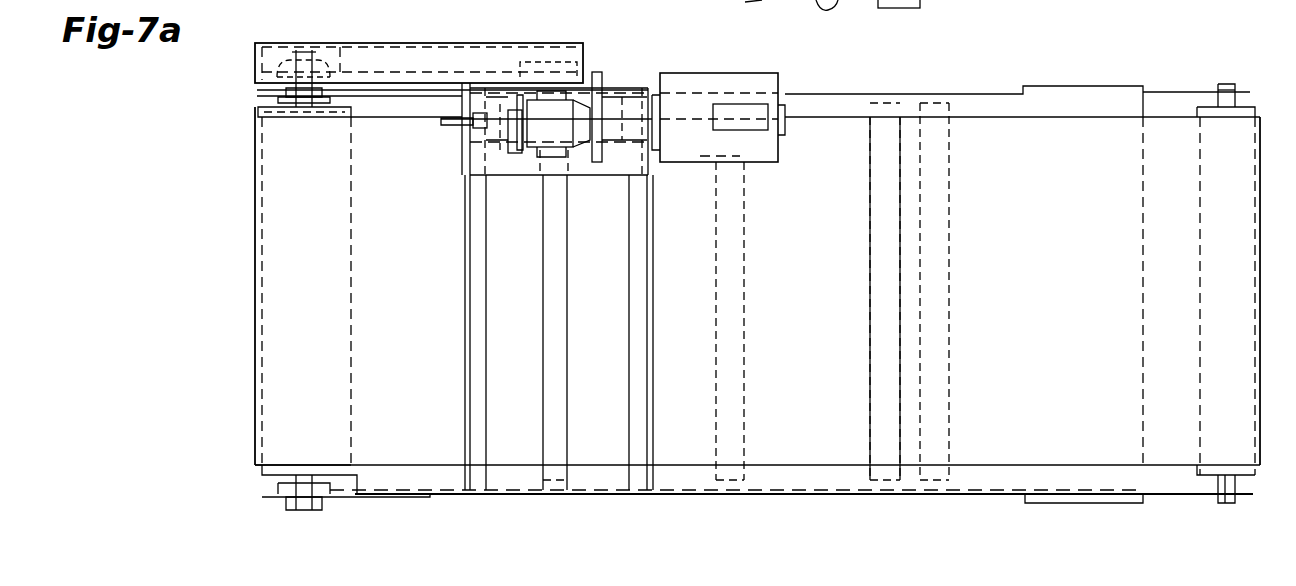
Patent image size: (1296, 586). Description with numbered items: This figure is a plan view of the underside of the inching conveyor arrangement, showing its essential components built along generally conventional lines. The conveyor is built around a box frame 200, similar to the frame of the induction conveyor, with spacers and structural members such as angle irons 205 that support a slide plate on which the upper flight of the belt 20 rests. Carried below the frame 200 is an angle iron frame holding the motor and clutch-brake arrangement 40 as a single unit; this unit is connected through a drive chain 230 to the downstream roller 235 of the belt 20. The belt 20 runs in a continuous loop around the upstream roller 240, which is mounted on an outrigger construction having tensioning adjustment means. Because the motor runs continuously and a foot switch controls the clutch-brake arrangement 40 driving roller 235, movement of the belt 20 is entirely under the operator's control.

The inching conveyor belt 20 is at (256, 167).
The motor and clutch-brake arrangement 40 is at (657, 68).
The box frame 200 is at (826, 92).
The angle irons 205 is at (742, 226).
The drive chain 230 is at (408, 75).
The downstream roller 235 is at (258, 110).
The upstream roller 240 is at (1256, 107).